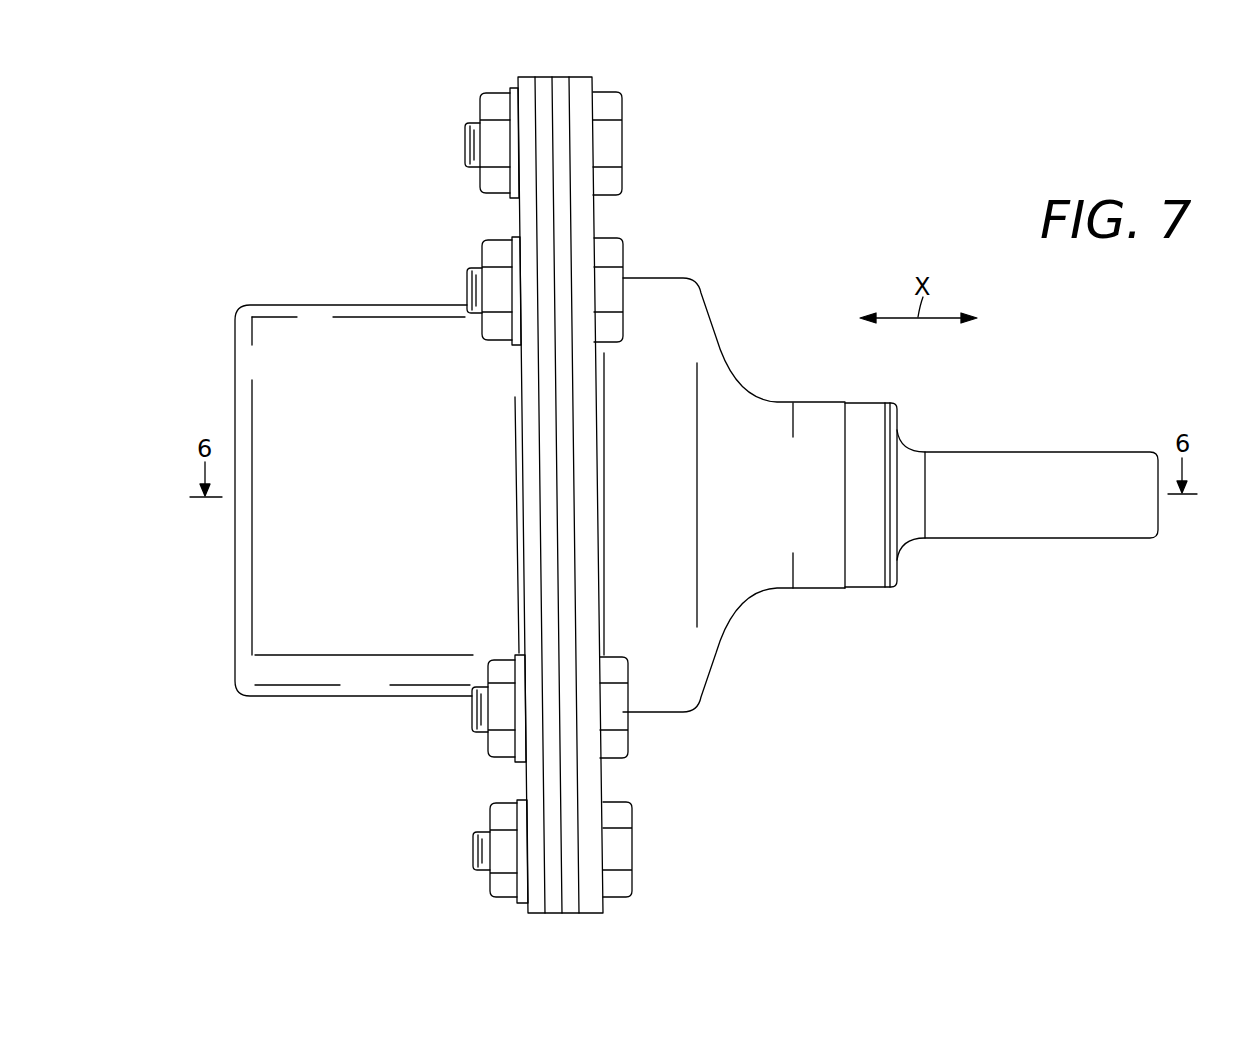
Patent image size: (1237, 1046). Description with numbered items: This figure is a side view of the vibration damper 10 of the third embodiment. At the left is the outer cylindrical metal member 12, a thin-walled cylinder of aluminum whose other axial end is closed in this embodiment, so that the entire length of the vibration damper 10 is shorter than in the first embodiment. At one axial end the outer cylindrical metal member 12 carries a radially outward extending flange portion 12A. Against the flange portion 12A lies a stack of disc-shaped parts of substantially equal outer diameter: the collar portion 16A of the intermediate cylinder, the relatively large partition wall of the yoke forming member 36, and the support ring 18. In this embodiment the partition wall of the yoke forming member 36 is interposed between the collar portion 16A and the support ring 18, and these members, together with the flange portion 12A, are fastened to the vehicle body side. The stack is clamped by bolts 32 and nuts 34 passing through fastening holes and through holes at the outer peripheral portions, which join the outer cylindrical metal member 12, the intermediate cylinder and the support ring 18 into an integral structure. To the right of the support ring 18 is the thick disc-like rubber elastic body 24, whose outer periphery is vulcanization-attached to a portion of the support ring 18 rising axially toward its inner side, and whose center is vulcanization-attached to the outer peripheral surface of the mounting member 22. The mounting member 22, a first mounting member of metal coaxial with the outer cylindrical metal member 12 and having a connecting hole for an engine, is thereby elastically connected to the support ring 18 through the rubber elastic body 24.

The vibration damper 10 is at (700, 163).
The outer cylindrical metal member 12 is at (398, 305).
The flange portion 12A is at (519, 229).
The collar portion 16A is at (534, 214).
The support ring 18 is at (596, 205).
The mounting member 22 is at (962, 450).
The rubber elastic body 24 is at (716, 348).
The bolt 32 is at (607, 106).
The nut 34 is at (492, 101).
The yoke forming member 36 is at (571, 223).